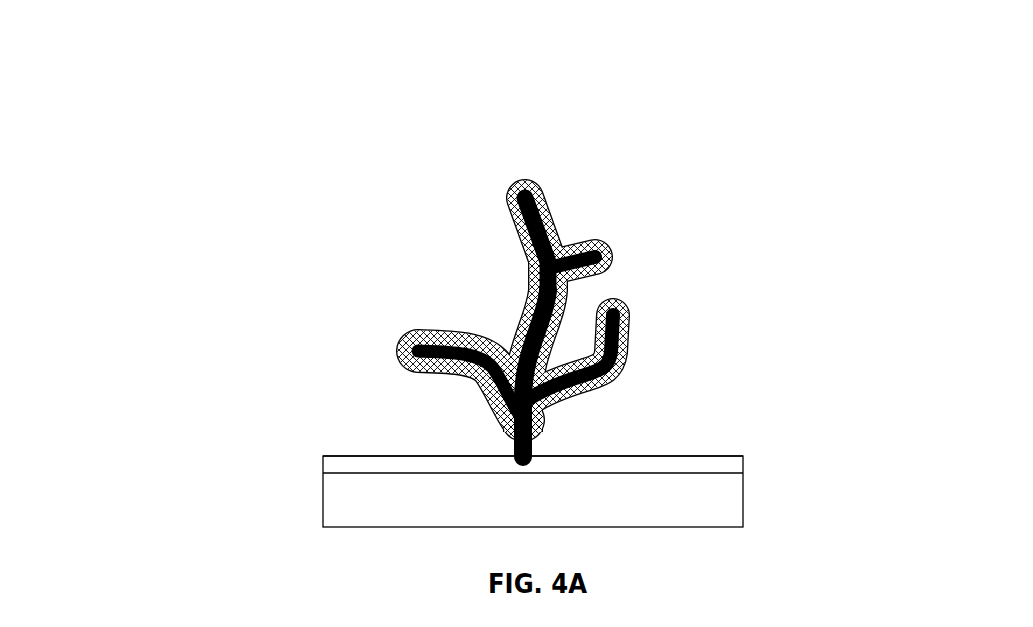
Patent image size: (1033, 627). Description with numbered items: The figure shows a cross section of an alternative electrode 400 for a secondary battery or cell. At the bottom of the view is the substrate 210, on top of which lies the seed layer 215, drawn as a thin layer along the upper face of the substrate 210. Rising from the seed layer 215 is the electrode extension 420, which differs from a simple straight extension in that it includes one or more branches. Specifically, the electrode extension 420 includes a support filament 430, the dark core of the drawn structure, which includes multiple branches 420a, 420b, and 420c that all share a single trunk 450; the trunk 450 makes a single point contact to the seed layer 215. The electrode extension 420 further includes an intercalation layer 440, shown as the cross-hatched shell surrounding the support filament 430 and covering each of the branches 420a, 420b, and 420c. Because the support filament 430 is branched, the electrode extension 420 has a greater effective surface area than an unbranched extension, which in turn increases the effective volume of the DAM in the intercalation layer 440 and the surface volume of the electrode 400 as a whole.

The electrode 400 is at (232, 143).
The substrate 210 is at (330, 498).
The seed layer 215 is at (330, 461).
The electrode extension 420 is at (538, 139).
The branch 420a is at (426, 306).
The branch 420b is at (566, 200).
The branch 420c is at (645, 346).
The support filament 430 is at (522, 282).
The intercalation layer 440 is at (590, 230).
The trunk 450 is at (532, 441).